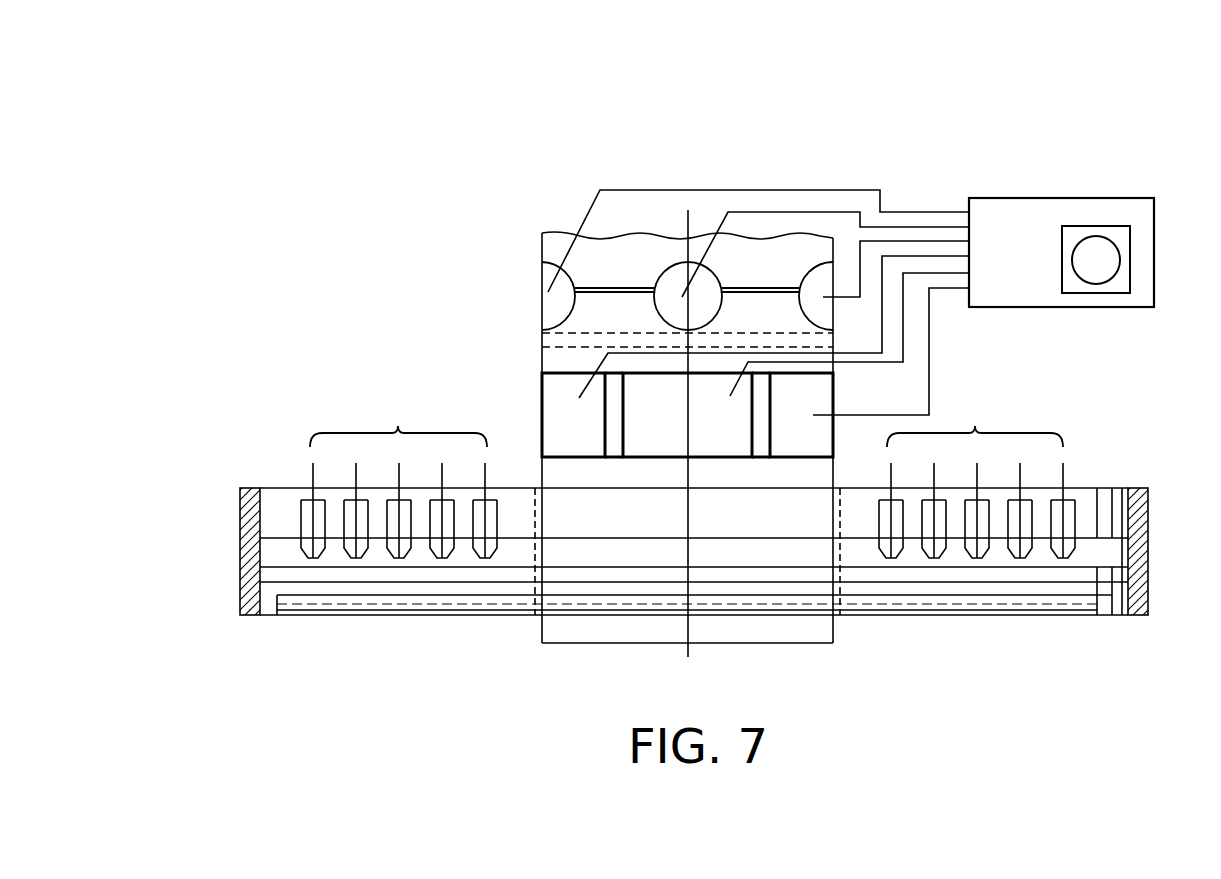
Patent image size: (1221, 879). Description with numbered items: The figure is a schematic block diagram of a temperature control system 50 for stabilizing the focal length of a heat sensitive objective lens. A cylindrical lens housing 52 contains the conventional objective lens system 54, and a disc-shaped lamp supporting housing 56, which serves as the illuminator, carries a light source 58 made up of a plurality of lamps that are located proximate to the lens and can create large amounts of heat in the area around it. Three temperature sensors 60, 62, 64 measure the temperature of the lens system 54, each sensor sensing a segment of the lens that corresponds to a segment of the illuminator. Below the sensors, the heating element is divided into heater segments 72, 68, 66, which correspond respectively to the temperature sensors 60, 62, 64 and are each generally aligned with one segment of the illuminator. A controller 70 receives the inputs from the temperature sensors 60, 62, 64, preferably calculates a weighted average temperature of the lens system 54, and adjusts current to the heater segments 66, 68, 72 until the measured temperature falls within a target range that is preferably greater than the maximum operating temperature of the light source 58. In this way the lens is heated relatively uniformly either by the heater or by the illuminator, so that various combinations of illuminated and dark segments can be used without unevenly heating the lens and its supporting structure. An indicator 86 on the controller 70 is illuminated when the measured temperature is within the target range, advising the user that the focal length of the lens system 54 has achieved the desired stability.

The system 50 is at (433, 131).
The cylindrical lens housing 52 is at (550, 252).
The objective lens system 54 is at (542, 347).
The lamp supporting housing 56 is at (240, 508).
The light source 58 is at (323, 398).
The temperature sensor 60 is at (542, 278).
The temperature sensor 62 is at (720, 260).
The temperature sensor 64 is at (817, 277).
The heating element segment 66 is at (840, 391).
The heater segment 68 is at (701, 428).
The controller 70 is at (1012, 210).
The heater segment 72 is at (553, 432).
The indicator 86 is at (1118, 225).